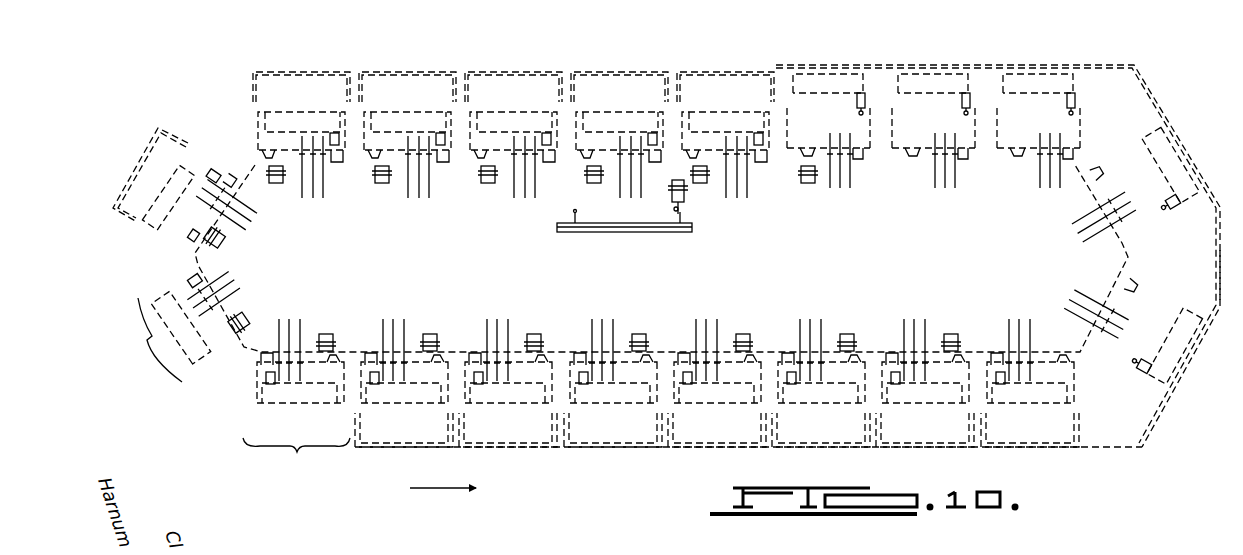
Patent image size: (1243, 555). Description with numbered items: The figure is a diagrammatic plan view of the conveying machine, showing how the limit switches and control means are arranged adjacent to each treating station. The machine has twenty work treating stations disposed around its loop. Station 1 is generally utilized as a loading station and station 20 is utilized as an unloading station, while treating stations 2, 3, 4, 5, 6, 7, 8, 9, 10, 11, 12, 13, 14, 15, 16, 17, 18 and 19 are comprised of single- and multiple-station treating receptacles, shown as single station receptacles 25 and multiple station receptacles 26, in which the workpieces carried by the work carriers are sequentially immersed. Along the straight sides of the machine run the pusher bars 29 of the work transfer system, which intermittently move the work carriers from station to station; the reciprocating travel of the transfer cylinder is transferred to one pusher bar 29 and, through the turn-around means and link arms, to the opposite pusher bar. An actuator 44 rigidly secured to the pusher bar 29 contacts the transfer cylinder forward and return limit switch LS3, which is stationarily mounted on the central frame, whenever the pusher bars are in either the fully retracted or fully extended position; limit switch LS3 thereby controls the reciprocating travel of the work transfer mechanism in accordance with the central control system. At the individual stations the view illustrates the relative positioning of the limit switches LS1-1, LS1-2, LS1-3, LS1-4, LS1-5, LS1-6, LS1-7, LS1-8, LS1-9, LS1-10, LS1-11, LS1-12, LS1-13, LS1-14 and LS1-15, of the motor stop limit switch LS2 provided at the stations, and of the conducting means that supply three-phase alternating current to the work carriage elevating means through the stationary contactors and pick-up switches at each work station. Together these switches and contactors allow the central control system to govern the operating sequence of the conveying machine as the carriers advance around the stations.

The loading station 1 is at (296, 397).
The treating station 2 is at (416, 421).
The treating station 3 is at (520, 421).
The treating station 4 is at (622, 421).
The treating station 5 is at (722, 421).
The treating station 6 is at (827, 421).
The treating station 7 is at (930, 421).
The treating station 8 is at (1032, 421).
The treating station 9 is at (1168, 349).
The treating station 10 is at (1168, 169).
The treating station 11 is at (1032, 86).
The treating station 12 is at (927, 86).
The treating station 13 is at (822, 86).
The treating station 14 is at (722, 86).
The treating station 15 is at (618, 86).
The treating station 16 is at (515, 86).
The treating station 17 is at (409, 86).
The treating station 18 is at (303, 86).
The treating station 19 is at (150, 181).
The unloading station 20 is at (189, 319).
The single station receptacle 25 is at (652, 70).
The multiple station receptacle 26 is at (1220, 268).
The pusher bar 29 is at (620, 232).
The actuator 44 is at (573, 213).
The limit switch LS1-1 is at (326, 333).
The limit switch LS1-2 is at (430, 333).
The limit switch LS1-3 is at (534, 333).
The limit switch LS1-4 is at (639, 333).
The limit switch LS1-5 is at (743, 333).
The limit switch LS1-6 is at (847, 333).
The limit switch LS1-7 is at (951, 333).
The limit switch LS1-8 is at (808, 183).
The limit switch LS1-9 is at (700, 183).
The limit switch LS1-10 is at (594, 183).
The limit switch LS1-11 is at (488, 183).
The limit switch LS1-12 is at (382, 183).
The limit switch LS1-13 is at (276, 183).
The limit switch LS1-14 is at (222, 241).
The limit switch LS1-15 is at (246, 318).
The motor stop limit switch LS2 is at (337, 133).
The transfer cylinder forward and return limit switch LS3 is at (684, 199).